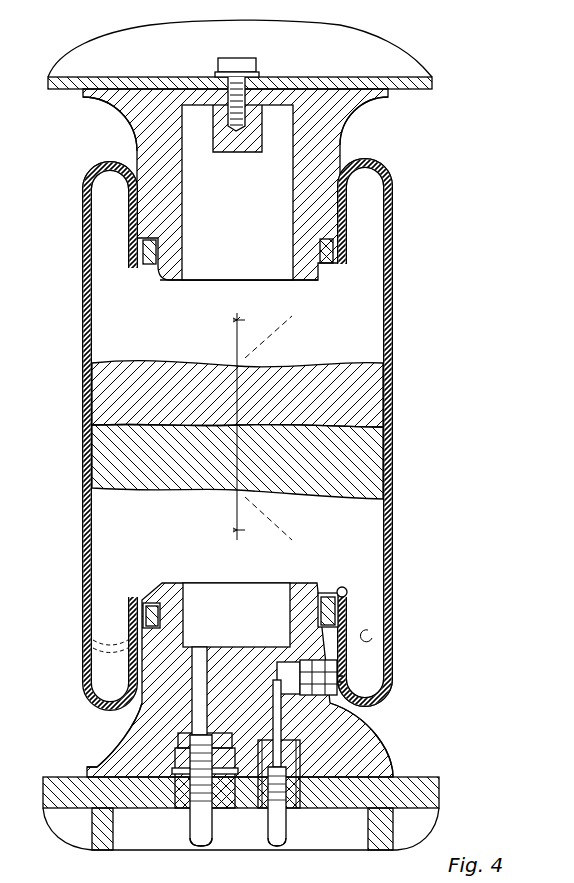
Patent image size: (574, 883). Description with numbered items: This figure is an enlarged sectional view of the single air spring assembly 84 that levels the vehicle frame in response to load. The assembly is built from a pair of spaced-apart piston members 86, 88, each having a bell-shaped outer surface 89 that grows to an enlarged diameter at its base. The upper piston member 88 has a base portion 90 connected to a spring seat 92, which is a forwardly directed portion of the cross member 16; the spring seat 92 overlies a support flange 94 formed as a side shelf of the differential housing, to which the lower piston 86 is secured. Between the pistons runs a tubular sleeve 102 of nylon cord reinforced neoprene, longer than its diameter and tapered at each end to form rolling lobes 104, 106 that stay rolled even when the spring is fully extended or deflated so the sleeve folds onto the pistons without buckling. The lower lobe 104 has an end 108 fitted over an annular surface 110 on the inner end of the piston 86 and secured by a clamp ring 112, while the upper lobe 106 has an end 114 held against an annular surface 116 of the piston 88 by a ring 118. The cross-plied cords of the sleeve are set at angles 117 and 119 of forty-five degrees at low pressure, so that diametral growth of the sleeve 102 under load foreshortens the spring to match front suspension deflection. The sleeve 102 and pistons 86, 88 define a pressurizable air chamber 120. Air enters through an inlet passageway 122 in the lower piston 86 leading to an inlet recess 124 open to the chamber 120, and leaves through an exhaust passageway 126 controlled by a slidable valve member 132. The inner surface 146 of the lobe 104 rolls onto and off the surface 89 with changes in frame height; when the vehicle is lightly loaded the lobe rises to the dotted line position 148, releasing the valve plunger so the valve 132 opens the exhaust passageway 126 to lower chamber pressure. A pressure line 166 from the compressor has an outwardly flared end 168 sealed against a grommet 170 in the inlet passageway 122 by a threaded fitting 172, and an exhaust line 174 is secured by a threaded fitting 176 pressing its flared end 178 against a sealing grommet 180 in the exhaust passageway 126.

The cross member 16 is at (92, 66).
The spring seat 92 is at (338, 80).
The base portion 90 is at (379, 90).
The upper piston member 88 is at (323, 118).
The bell-shaped outer surface 89 is at (128, 124).
The rolling lobe 106 is at (360, 157).
The tubular sleeve 102 is at (394, 267).
The rolling lobe 104 is at (395, 688).
The air spring assembly 84 is at (279, 419).
The annular surface 116 is at (158, 250).
The ring 118 is at (333, 250).
The end 114 is at (312, 256).
The pressurizable air chamber 120 is at (352, 300).
The cord angle 117 is at (320, 372).
The cord angle 119 is at (198, 462).
The annular surface 110 is at (153, 603).
The end 108 is at (322, 608).
The clamp ring 112 is at (341, 604).
The inlet recess 124 is at (183, 608).
The inlet passageway 122 is at (198, 660).
The exhaust passageway 126 is at (282, 706).
The valve member 132 is at (333, 669).
The inner surface 146 is at (330, 650).
The dotted line position 148 is at (368, 634).
The lower piston member 86 is at (323, 737).
The support flange 94 is at (408, 782).
The pressure line 166 is at (190, 830).
The outwardly flared end 168 is at (177, 750).
The sealing grommet 170 is at (181, 740).
The threaded fitting 172 is at (177, 771).
The exhaust line 174 is at (281, 814).
The threaded fitting 176 is at (297, 805).
The outwardly flared end 178 is at (294, 760).
The sealing grommet 180 is at (268, 741).